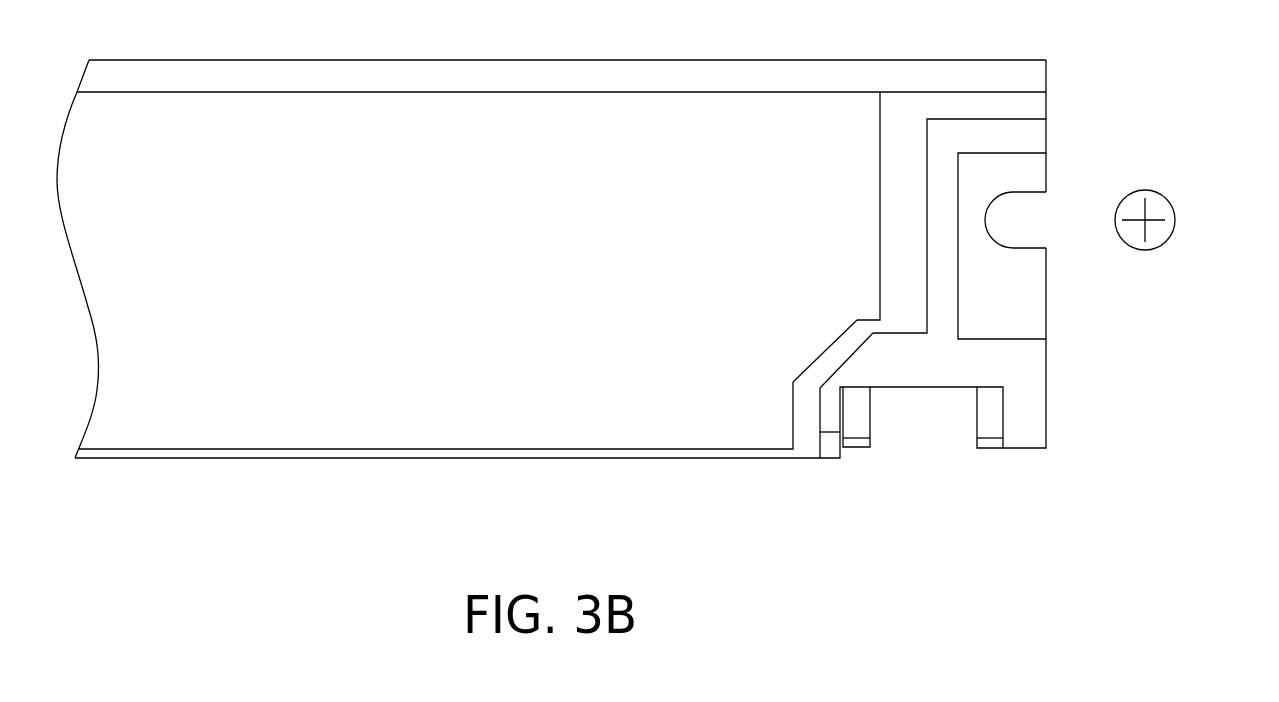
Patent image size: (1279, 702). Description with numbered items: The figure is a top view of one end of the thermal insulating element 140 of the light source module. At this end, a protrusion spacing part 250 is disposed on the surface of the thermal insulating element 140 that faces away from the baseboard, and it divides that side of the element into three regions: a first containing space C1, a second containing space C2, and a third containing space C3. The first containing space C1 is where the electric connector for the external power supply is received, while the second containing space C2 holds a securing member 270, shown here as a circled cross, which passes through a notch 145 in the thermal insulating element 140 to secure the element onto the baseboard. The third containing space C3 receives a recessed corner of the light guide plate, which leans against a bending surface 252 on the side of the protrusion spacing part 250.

The thermal insulating element 140 is at (450, 413).
The notch 145 is at (1018, 192).
The protrusion spacing part 250 is at (906, 160).
The bending surface 252 is at (790, 406).
The securing member 270 is at (1165, 220).
The first containing space C1 is at (922, 413).
The second containing space C2 is at (1024, 285).
The third containing space C3 is at (879, 213).